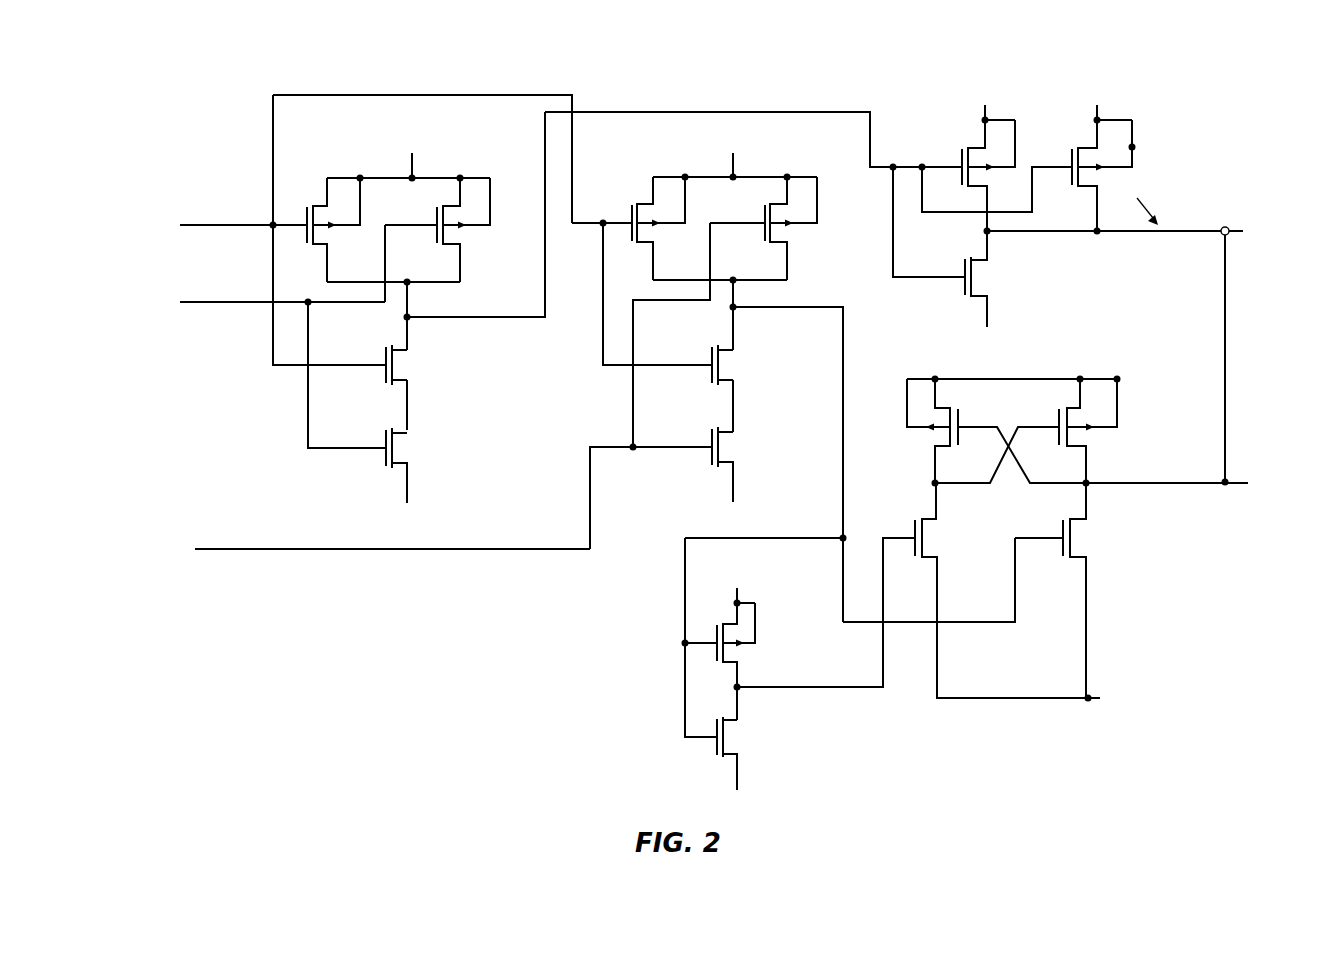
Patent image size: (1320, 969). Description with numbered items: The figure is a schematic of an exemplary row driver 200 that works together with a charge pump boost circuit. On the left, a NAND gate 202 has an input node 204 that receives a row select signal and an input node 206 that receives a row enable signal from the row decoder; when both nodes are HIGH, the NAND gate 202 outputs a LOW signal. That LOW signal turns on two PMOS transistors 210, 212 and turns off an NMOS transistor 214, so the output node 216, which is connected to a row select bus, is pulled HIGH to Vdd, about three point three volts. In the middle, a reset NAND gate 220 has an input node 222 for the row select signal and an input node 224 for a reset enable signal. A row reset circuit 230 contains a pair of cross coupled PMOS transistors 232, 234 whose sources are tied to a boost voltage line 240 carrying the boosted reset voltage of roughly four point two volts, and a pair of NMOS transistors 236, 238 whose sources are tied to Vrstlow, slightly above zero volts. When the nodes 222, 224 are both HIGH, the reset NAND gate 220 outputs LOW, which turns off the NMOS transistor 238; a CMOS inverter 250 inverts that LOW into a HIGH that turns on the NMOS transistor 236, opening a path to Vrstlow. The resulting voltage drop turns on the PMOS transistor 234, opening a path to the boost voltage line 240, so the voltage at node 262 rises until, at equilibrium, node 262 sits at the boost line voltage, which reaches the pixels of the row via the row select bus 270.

The row driver 200 is at (212, 110).
The NAND gate 202 is at (478, 340).
The input node 204 is at (272, 223).
The input node 206 is at (309, 304).
The PMOS transistor 210 is at (972, 144).
The PMOS transistor 212 is at (1082, 144).
The NMOS transistor 214 is at (1014, 317).
The output node 216 is at (1229, 226).
The reset NAND gate 220 is at (666, 503).
The input node 222 is at (607, 203).
The input node 224 is at (617, 432).
The row reset circuit 230 is at (1219, 597).
The cross coupled PMOS transistor 232 is at (940, 408).
The cross coupled PMOS transistor 234 is at (1088, 425).
The NMOS transistor 236 is at (922, 516).
The NMOS transistor 238 is at (1066, 553).
The boost voltage line 240 is at (1126, 374).
The CMOS inverter 250 is at (697, 757).
The node 262 is at (1088, 485).
The row select bus 270 is at (1233, 480).